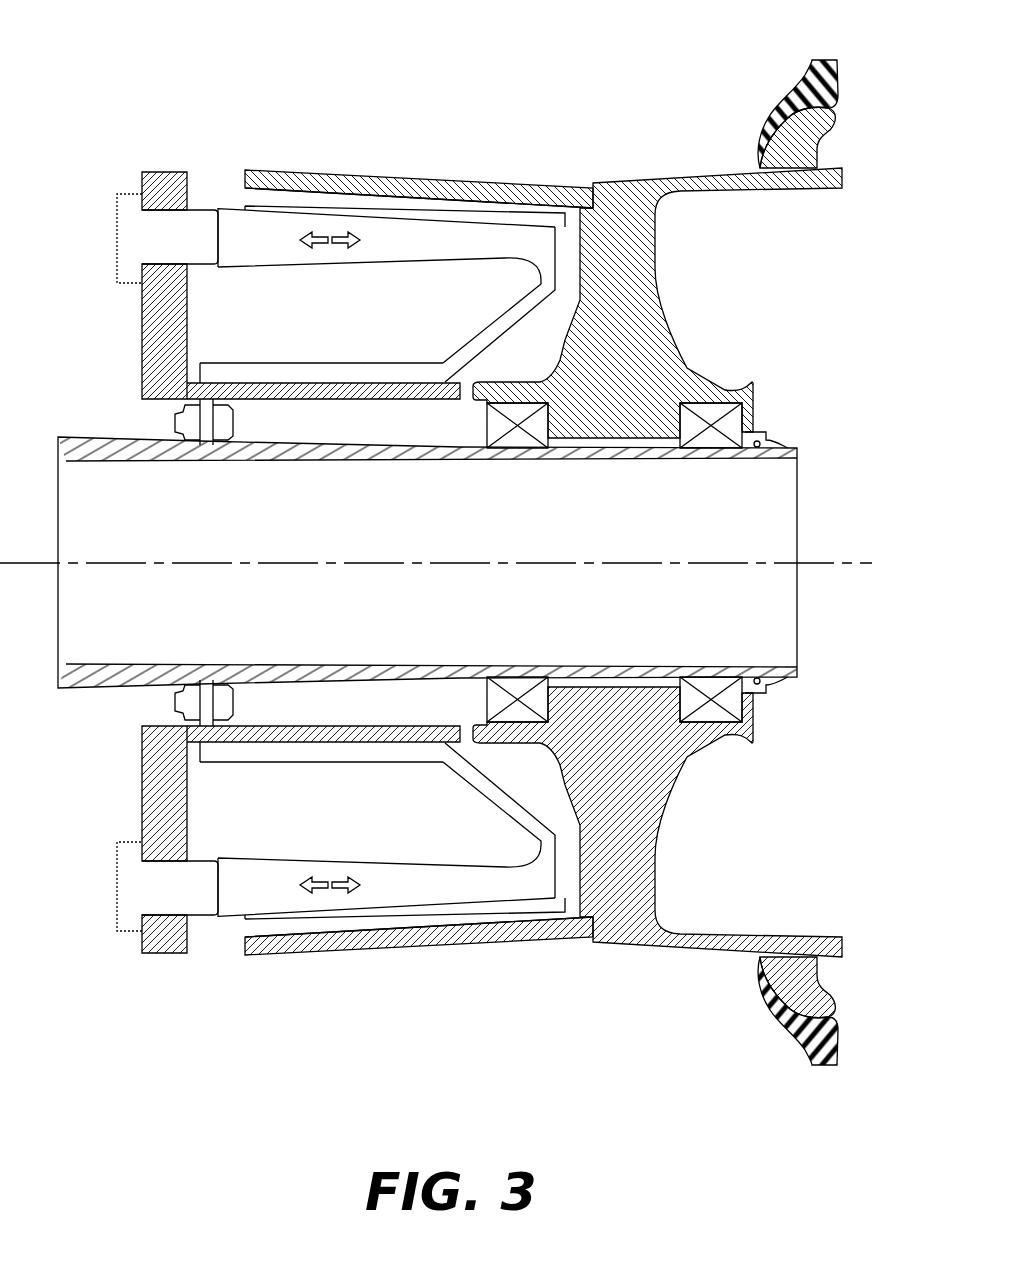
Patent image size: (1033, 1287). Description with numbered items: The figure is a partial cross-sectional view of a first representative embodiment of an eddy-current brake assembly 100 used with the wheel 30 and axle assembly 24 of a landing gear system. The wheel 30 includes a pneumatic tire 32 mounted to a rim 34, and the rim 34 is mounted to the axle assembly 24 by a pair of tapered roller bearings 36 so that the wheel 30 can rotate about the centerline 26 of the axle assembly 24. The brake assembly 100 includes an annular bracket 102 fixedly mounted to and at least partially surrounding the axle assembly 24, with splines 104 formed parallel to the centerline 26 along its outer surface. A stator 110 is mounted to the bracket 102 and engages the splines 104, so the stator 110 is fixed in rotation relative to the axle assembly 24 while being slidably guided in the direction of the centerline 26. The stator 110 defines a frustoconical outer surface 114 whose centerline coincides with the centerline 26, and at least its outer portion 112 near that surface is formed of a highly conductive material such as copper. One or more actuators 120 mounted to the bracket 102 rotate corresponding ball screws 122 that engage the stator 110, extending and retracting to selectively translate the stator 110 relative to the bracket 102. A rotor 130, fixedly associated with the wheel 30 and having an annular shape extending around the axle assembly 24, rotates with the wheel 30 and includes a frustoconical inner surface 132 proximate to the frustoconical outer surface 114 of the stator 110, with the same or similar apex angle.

The axle assembly 24 is at (130, 688).
The centerline 26 is at (822, 560).
The wheel 30 is at (858, 105).
The pneumatic tire 32 is at (840, 62).
The rim 34 is at (692, 350).
The tapered roller bearings 36 is at (552, 450).
The brake assembly 100 is at (140, 152).
The bracket 102 is at (142, 328).
The splines 104 is at (262, 383).
The stator 110 is at (487, 330).
The outer portion 112 is at (372, 240).
The frustoconical outer surface 114 is at (492, 228).
The actuators 120 is at (117, 238).
The ball screws 122 is at (205, 215).
The rotor 130 is at (358, 205).
The frustoconical inner surface 132 is at (432, 212).